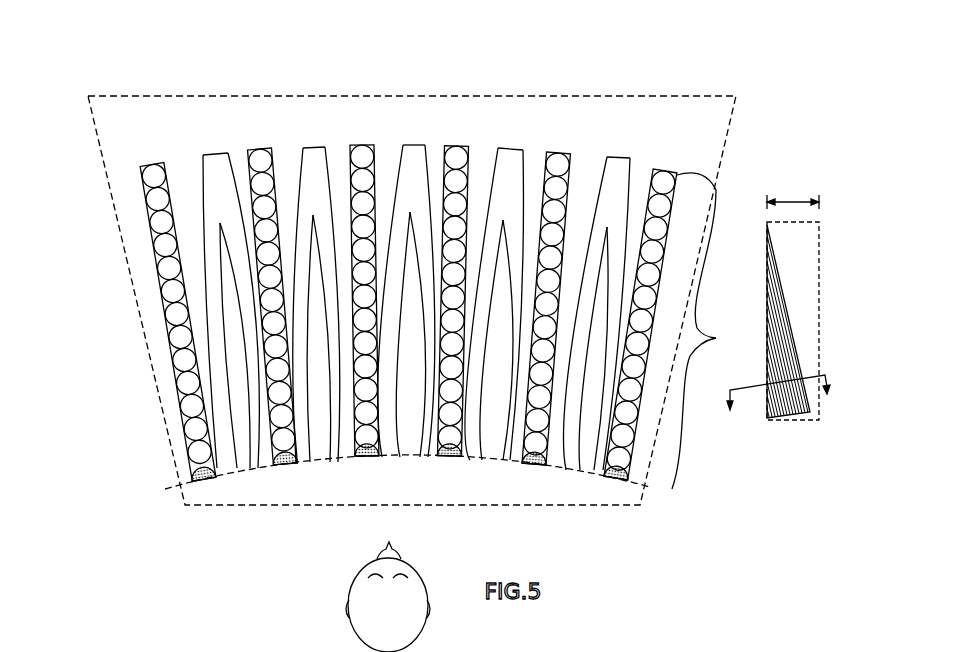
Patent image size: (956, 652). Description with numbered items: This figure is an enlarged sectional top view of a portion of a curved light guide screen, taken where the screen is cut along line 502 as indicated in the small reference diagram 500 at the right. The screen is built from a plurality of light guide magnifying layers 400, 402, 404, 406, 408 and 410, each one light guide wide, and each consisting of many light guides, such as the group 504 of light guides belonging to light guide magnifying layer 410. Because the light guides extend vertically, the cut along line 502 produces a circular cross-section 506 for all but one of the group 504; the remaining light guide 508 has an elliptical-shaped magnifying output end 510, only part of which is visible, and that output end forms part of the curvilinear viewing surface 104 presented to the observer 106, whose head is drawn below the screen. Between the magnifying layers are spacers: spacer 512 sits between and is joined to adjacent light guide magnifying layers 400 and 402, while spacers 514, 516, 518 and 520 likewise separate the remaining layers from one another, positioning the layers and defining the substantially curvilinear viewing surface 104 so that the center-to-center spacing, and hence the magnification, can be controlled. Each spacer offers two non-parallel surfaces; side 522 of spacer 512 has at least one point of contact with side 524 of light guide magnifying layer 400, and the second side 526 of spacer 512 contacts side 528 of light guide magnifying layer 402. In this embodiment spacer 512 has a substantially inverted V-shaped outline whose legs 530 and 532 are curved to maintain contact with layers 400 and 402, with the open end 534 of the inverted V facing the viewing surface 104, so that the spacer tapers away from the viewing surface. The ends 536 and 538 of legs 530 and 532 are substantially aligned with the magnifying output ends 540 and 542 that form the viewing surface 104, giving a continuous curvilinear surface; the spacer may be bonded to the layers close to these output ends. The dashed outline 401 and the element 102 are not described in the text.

The transducer element 102 is at (814, 285).
The curvilinear viewing surface 104 is at (488, 463).
The observer 106 is at (371, 625).
The light guide magnifying layer 400 is at (166, 176).
The array outline 401 is at (725, 127).
The light guide magnifying layer 402 is at (275, 166).
The light guide magnifying layer 404 is at (375, 183).
The light guide magnifying layer 406 is at (463, 180).
The light guide magnifying layer 408 is at (572, 183).
The light guide magnifying layer 410 is at (649, 186).
The reference diagram 500 is at (810, 347).
The section line 502 is at (815, 383).
The group of light guides 504 is at (713, 331).
The circular cross-section 506 is at (782, 113).
The light guide 508 is at (602, 476).
The magnifying output end 510 is at (587, 523).
The spacer 512 is at (217, 177).
The spacer 514 is at (320, 163).
The spacer 516 is at (415, 173).
The spacer 518 is at (515, 170).
The spacer 520 is at (607, 183).
The side of spacer 522 is at (185, 385).
The side of light guide magnifying layer 524 is at (65, 346).
The second side of spacer 526 is at (257, 268).
The side of light guide magnifying layer 528 is at (255, 243).
The leg of spacer 530 is at (195, 477).
The leg of spacer 532 is at (272, 464).
The open end of inverted V 534 is at (250, 465).
The end of leg 536 is at (230, 475).
The end of leg 538 is at (262, 468).
The magnifying output end 540 is at (195, 478).
The magnifying output end 542 is at (365, 484).